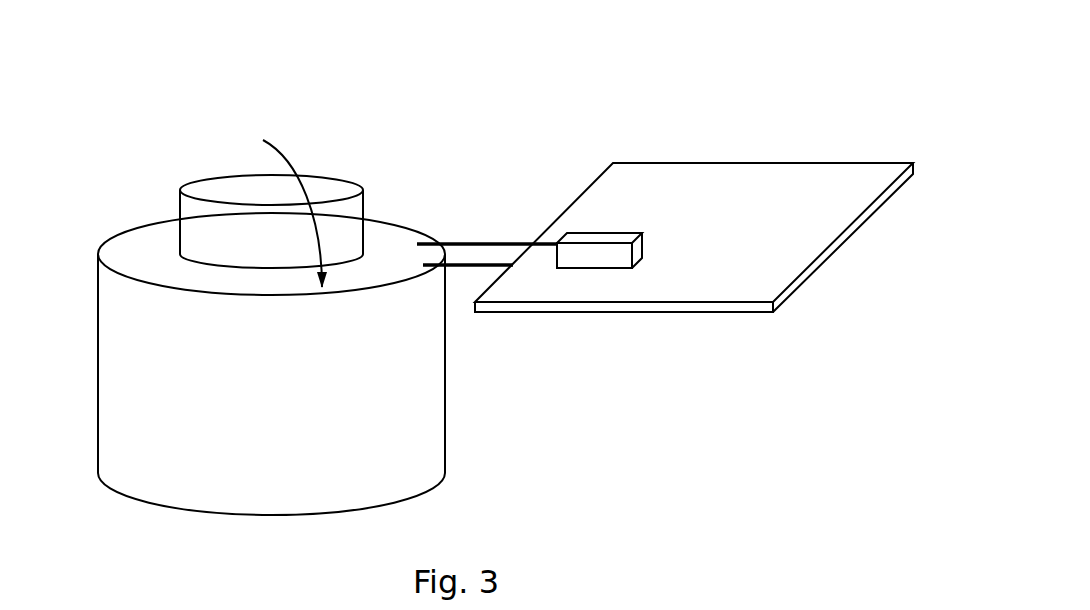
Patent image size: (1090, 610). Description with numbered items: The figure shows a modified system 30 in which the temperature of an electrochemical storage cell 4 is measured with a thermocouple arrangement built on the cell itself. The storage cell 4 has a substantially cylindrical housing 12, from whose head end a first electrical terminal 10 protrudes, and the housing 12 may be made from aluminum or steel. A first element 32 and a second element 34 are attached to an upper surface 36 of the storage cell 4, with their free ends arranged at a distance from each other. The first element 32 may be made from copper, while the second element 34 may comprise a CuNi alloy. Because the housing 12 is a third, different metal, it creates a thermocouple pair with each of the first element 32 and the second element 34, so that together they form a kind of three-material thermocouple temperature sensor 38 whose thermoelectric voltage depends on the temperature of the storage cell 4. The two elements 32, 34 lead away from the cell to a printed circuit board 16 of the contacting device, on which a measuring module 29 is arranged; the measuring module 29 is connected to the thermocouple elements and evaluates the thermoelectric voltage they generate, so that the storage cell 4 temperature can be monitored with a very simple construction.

The electrochemical storage cell 4 is at (130, 387).
The first electrical terminal 10 is at (212, 190).
The housing 12 is at (143, 412).
The printed circuit board 16 is at (812, 140).
The measuring module 29 is at (638, 252).
The modified system 30 is at (672, 97).
The first element 32 is at (473, 267).
The second element 34 is at (464, 243).
The upper surface 36 is at (277, 203).
The three-material thermocouple temperature sensor 38 is at (513, 147).